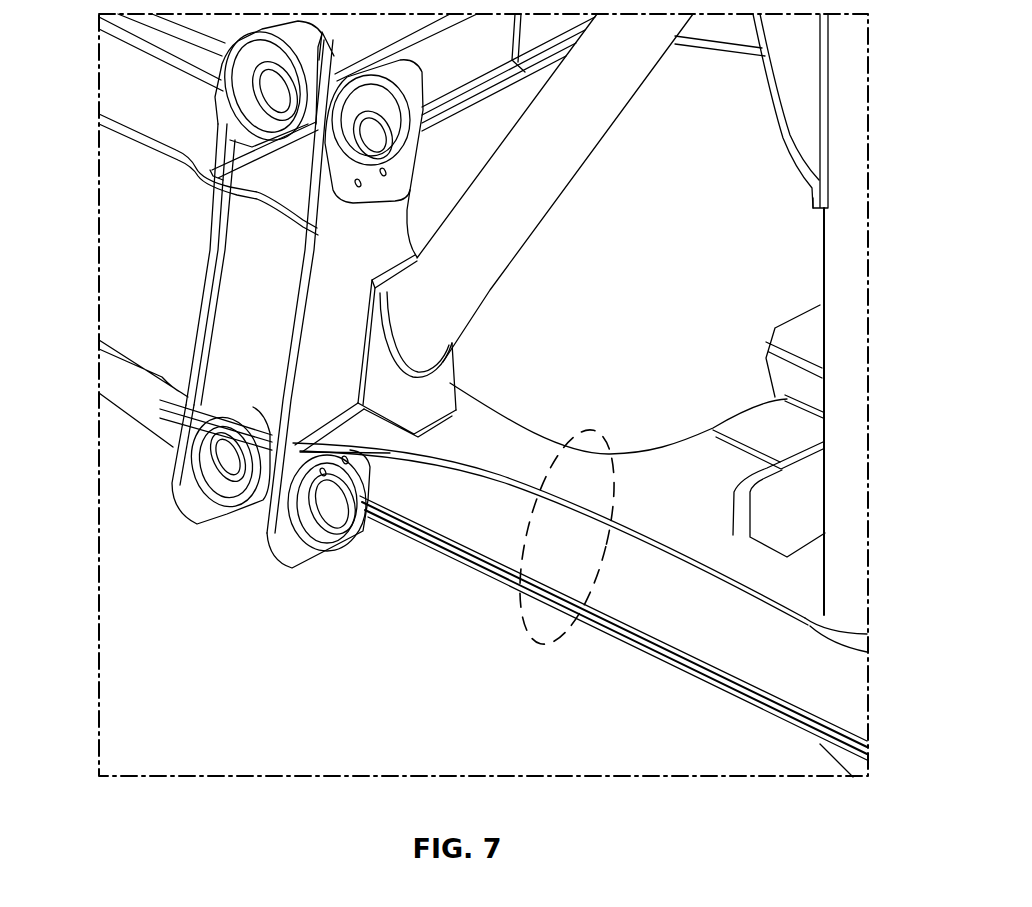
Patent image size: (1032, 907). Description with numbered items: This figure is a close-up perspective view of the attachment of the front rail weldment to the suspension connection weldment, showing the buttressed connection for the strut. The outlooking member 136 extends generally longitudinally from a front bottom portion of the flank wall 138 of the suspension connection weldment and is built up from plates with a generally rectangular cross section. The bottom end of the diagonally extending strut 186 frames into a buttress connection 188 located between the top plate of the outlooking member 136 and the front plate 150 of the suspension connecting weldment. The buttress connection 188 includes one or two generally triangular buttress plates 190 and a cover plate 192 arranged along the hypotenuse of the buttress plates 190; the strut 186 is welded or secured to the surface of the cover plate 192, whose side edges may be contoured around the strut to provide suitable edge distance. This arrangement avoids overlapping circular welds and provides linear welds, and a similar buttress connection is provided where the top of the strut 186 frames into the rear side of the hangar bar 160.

The outlooking member 136 is at (545, 648).
The flank wall 138 is at (141, 283).
The front plate 150 is at (400, 452).
The hangar bar 160 is at (847, 322).
The diagonally extending strut 186 is at (565, 172).
The buttress connection 188 is at (512, 338).
The triangular buttress plate 190 is at (385, 380).
The cover plate 192 is at (448, 383).